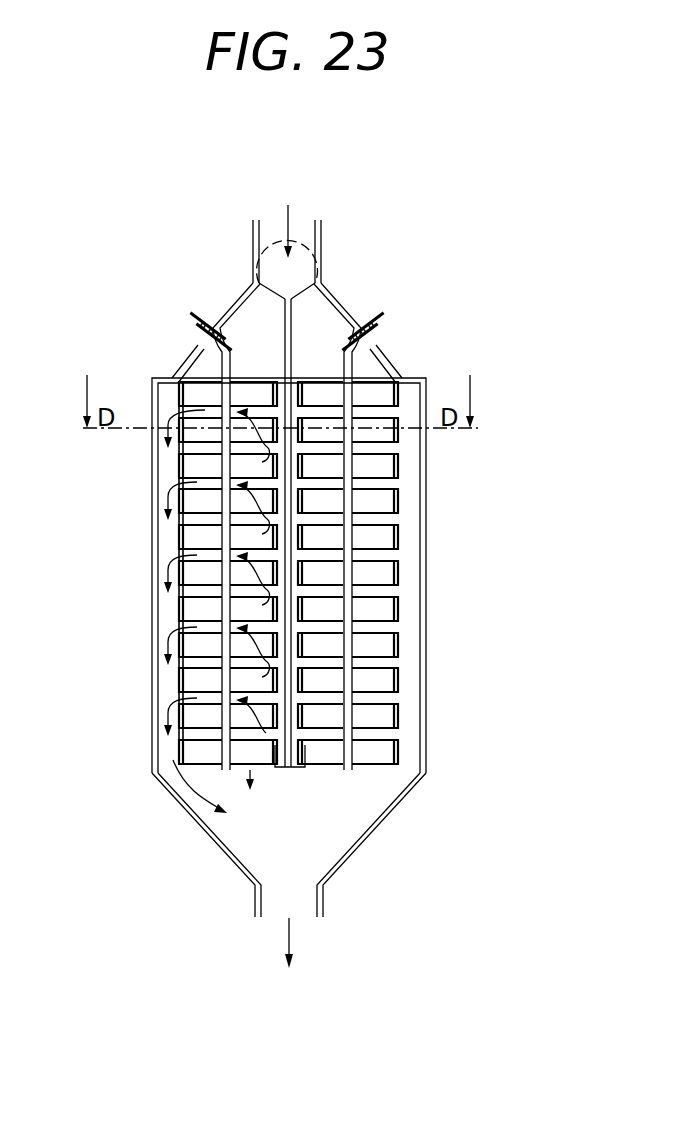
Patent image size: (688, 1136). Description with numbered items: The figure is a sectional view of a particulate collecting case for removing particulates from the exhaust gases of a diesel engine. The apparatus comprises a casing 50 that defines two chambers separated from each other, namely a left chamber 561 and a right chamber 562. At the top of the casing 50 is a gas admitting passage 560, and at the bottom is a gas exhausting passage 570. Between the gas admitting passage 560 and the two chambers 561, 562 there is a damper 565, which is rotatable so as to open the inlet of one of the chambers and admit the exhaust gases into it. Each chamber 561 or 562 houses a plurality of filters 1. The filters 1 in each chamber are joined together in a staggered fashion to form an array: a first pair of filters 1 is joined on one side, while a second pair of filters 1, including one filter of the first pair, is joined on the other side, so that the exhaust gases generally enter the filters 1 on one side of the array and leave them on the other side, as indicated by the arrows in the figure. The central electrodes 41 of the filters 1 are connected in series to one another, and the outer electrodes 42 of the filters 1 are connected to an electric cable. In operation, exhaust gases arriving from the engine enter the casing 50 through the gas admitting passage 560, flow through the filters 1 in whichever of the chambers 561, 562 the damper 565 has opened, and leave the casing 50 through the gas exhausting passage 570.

The filter 1 is at (183, 550).
The central electrode 41 is at (381, 320).
The outer electrode 42 is at (180, 465).
The casing 50 is at (433, 603).
The gas admitting passage 560 is at (322, 237).
The left chamber 561 is at (252, 325).
The right chamber 562 is at (313, 325).
The damper 565 is at (322, 262).
The gas exhausting passage 570 is at (332, 825).